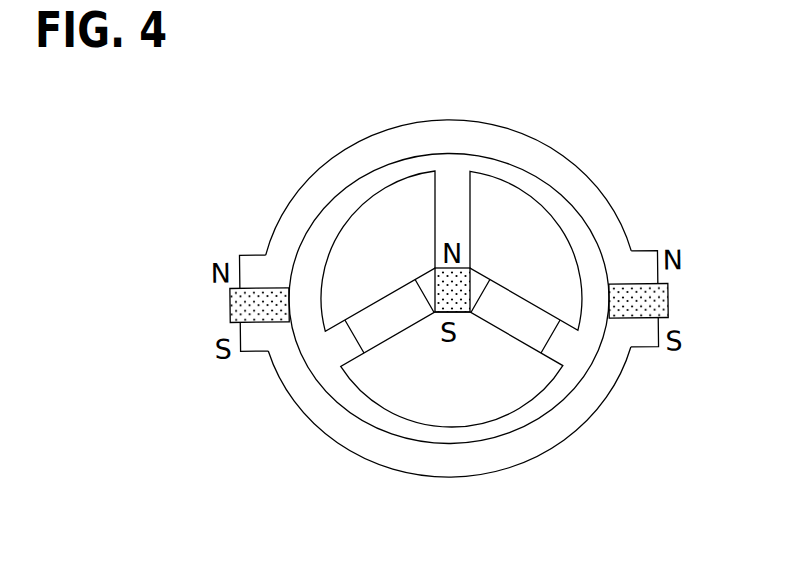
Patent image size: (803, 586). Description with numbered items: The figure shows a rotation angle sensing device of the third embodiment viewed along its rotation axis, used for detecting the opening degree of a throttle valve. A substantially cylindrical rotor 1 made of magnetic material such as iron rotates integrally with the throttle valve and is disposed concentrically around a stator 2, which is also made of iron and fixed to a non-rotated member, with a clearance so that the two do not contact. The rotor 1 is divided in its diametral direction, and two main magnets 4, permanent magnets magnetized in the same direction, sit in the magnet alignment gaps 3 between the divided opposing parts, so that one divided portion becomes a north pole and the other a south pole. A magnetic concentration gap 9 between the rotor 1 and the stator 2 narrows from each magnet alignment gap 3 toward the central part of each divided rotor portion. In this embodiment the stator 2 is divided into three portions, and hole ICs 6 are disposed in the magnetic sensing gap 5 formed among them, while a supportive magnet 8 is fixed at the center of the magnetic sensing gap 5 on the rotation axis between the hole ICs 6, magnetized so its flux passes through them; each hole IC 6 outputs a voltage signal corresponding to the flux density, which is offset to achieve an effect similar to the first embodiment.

The rotor 1 is at (541, 141).
The stator 2 is at (553, 216).
The magnet alignment gap 3 is at (267, 289).
The main magnet 4 is at (230, 306).
The magnetic sensing gap 5 is at (397, 293).
The hole IC 6 is at (503, 330).
The supportive magnet 8 is at (433, 280).
The magnetic concentration gap 9 is at (570, 232).